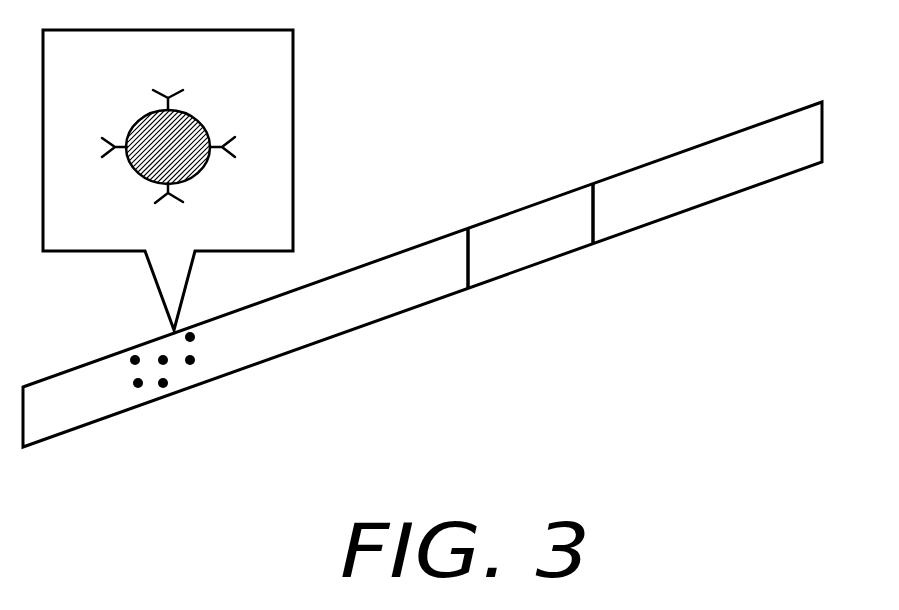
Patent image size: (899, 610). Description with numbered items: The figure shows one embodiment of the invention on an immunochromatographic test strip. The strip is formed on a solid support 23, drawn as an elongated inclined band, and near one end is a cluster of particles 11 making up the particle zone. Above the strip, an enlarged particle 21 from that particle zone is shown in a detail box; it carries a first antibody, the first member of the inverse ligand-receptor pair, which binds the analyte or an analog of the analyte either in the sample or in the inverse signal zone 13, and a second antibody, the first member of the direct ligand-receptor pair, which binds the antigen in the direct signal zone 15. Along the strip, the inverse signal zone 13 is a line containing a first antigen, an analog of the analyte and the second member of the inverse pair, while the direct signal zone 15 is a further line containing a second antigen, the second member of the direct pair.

The particles 11 is at (162, 397).
The inverse signal zone 13 is at (464, 308).
The direct signal zone 15 is at (600, 253).
The enlarged particle 21 is at (270, 132).
The solid support 23 is at (824, 127).